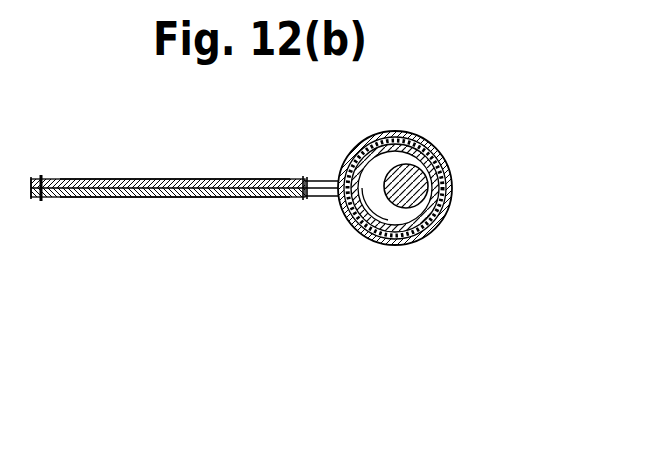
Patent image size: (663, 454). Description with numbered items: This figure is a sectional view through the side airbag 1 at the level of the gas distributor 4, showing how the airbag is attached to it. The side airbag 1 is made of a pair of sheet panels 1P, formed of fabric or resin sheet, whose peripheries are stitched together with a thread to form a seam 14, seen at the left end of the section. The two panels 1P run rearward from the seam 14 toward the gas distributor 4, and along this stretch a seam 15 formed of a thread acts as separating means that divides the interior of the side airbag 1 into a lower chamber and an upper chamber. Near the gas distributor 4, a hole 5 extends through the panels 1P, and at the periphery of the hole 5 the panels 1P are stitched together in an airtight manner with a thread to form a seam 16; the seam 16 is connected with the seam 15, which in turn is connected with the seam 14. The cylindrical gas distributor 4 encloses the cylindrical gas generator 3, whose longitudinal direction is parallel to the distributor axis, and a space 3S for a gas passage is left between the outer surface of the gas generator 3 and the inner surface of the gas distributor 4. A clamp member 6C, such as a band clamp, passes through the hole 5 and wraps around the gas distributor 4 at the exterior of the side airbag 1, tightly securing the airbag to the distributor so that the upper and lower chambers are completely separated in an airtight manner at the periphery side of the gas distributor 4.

The side airbag 1 is at (97, 163).
The sheet panels 1P is at (192, 178).
The gas generator 3 is at (428, 137).
The space 3S is at (355, 233).
The gas distributor 4 is at (353, 152).
The hole 5 is at (317, 198).
The clamp member 6C is at (385, 246).
The seam 14 is at (40, 178).
The seam 15 is at (90, 198).
The seam 16 is at (304, 180).